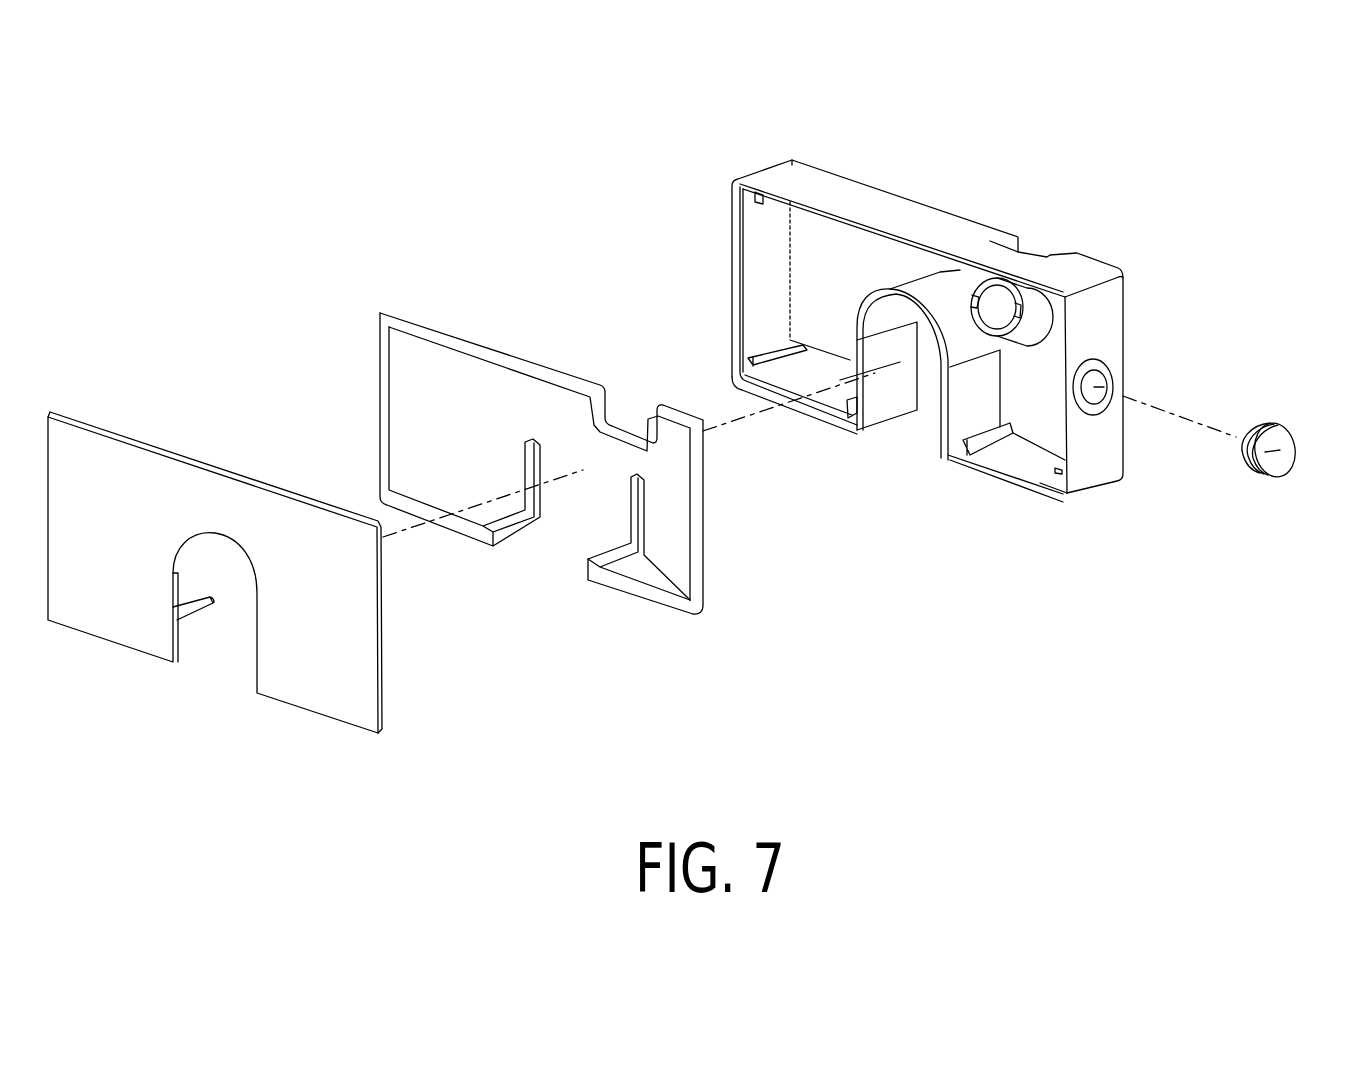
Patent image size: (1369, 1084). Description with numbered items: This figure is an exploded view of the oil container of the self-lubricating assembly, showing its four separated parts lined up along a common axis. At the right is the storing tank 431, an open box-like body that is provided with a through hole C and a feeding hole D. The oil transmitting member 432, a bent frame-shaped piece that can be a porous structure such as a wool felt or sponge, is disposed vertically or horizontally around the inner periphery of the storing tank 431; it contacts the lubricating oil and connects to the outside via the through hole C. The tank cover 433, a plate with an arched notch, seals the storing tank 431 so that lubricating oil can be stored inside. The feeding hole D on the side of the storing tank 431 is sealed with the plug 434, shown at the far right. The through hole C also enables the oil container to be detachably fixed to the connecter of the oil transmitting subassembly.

The storing tank 431 is at (977, 303).
The oil transmitting member 432 is at (635, 590).
The tank cover 433 is at (313, 680).
The plug 434 is at (1280, 450).
The through hole C is at (998, 312).
The feeding hole D is at (1099, 388).